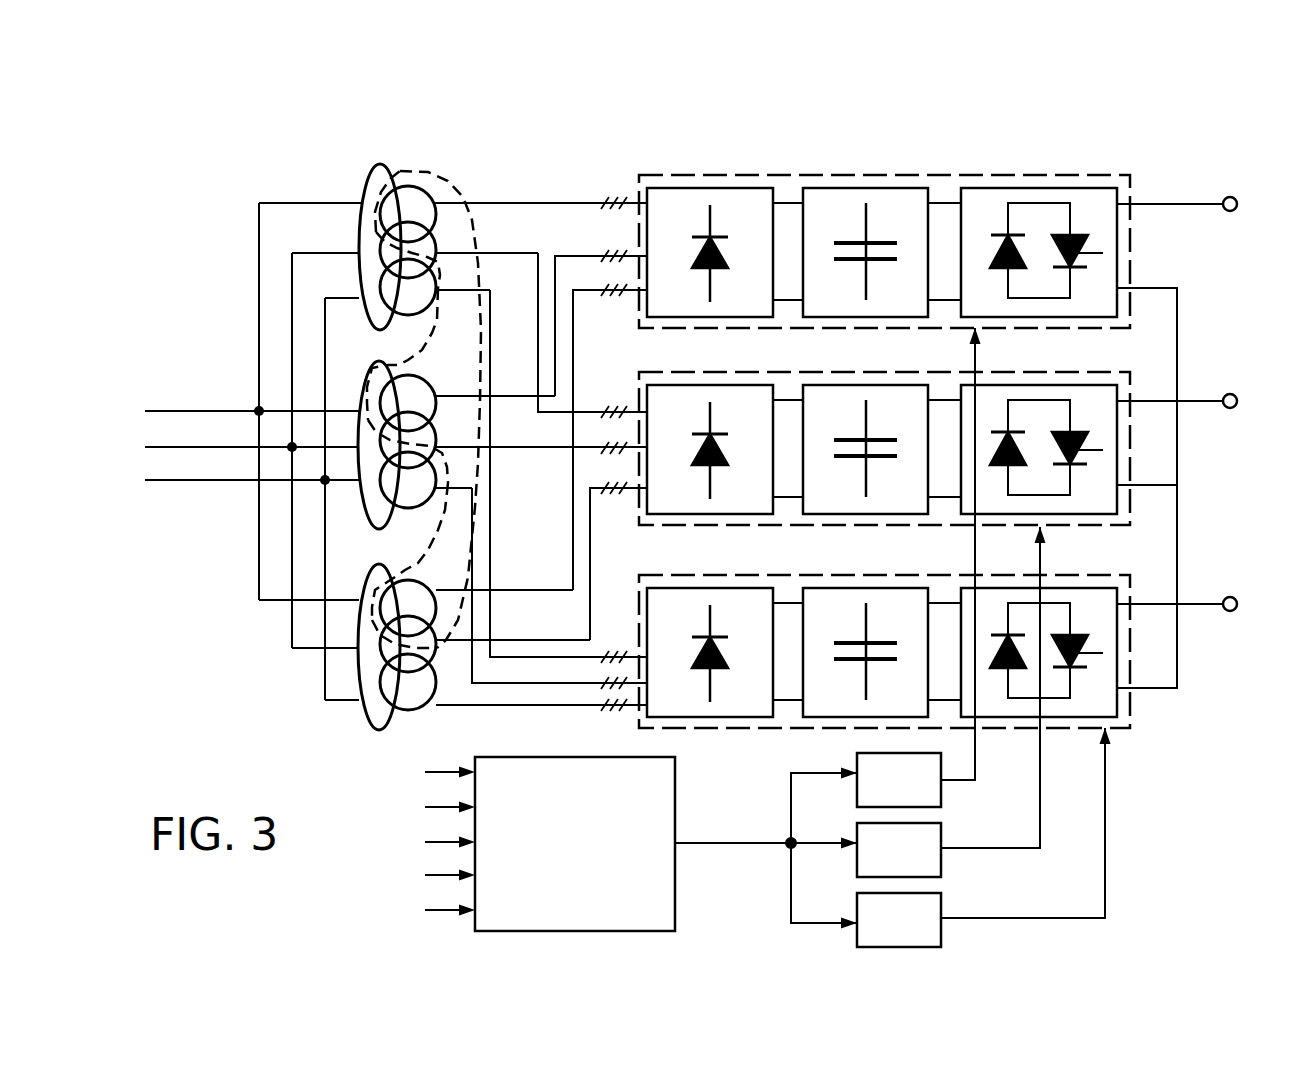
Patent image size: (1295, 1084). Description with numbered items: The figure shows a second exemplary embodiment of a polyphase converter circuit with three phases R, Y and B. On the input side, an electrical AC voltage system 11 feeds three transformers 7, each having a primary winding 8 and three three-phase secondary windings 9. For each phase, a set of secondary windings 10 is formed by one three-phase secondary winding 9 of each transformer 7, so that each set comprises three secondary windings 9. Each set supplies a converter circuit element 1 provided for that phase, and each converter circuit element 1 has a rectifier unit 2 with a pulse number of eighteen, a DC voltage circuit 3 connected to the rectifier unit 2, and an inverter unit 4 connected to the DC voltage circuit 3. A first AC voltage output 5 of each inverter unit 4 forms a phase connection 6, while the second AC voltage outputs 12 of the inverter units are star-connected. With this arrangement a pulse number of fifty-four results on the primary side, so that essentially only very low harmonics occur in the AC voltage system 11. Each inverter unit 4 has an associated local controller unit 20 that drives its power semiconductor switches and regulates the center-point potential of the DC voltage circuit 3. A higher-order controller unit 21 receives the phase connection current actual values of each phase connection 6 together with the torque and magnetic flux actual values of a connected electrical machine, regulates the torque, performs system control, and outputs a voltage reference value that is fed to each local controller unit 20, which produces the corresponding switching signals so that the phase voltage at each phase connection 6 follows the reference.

The converter circuit element 1 is at (710, 175).
The rectifier unit 2 is at (757, 187).
The DC voltage circuit 3 is at (886, 175).
The inverter unit 4 is at (1063, 175).
The first AC voltage output 5 is at (1154, 205).
The phase connection 6 is at (1240, 197).
The transformer 7 is at (299, 396).
The primary winding 8 is at (368, 720).
The three-phase secondary winding 9 is at (426, 187).
The set of secondary windings 10 is at (478, 330).
The electrical AC voltage system 11 is at (178, 397).
The second AC voltage output 12 is at (1152, 288).
The local controller unit 20 is at (984, 637).
The higher-order controller unit 21 is at (551, 842).